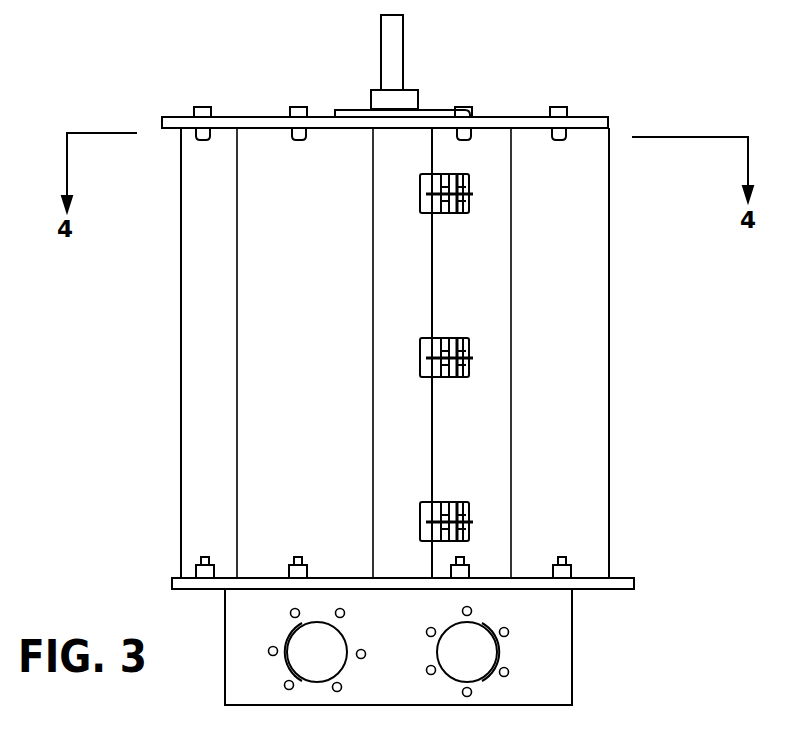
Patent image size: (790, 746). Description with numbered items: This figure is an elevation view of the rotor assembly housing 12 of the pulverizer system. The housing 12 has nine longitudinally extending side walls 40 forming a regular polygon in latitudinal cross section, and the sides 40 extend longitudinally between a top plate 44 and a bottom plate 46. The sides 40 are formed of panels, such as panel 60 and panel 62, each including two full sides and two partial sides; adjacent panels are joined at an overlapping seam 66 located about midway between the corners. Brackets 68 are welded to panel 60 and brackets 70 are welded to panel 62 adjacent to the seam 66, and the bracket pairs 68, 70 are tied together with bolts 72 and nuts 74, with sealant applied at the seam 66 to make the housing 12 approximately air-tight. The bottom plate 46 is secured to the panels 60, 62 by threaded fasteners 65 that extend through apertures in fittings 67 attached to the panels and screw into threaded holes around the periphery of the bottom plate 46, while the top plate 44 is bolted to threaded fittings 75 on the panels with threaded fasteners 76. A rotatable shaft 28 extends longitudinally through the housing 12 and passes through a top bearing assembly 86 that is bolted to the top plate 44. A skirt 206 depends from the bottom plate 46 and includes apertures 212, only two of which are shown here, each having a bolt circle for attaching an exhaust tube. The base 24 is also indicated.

The housing 12 is at (172, 340).
The rotatable shaft 28 is at (404, 49).
The side walls 40 is at (191, 257).
The top plate 44 is at (487, 119).
The bottom plate 46 is at (598, 590).
The panel 60 is at (600, 452).
The panel 62 is at (193, 494).
The threaded fasteners 65 is at (300, 560).
The overlapping seam 66 is at (433, 296).
The fittings 67 is at (308, 568).
The brackets 68 is at (467, 376).
The brackets 70 is at (422, 343).
The bolts 72 is at (470, 344).
The nuts 74 is at (433, 363).
The threaded fittings 75 is at (196, 136).
The threaded fasteners 76 is at (290, 110).
The top bearing assembly 86 is at (370, 109).
The skirt 206 is at (572, 682).
The apertures 212 is at (298, 652).
The base 24 is at (472, 743).